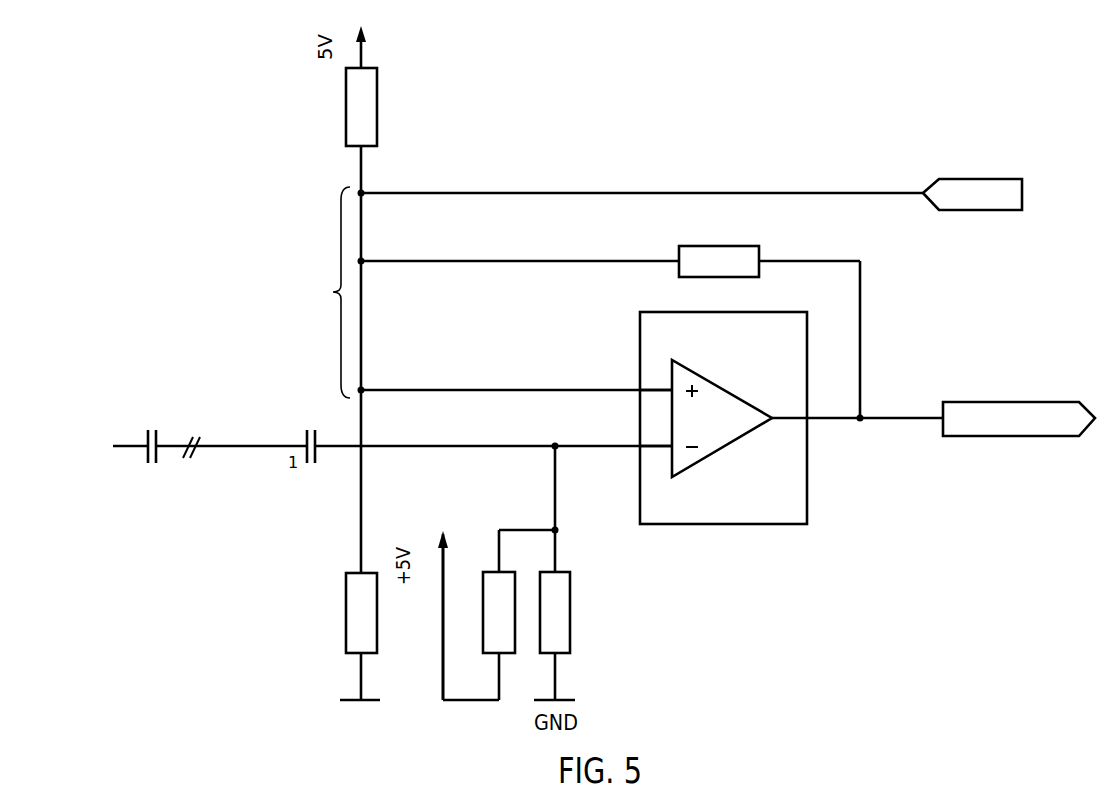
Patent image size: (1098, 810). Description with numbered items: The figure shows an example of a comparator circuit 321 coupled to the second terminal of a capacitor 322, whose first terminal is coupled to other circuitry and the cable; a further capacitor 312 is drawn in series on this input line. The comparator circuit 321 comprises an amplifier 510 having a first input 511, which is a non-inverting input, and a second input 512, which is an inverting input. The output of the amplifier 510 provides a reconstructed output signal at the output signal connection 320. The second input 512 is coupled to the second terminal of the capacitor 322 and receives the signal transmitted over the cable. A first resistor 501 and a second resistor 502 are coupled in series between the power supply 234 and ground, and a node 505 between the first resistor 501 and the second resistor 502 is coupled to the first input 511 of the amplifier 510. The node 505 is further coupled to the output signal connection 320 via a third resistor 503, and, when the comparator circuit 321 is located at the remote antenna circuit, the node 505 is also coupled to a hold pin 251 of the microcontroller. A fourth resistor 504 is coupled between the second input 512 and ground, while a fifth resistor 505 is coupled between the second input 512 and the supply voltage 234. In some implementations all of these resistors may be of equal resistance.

The power supply 234 is at (378, 16).
The second resistor 502 is at (377, 107).
The hold pin 251 is at (992, 163).
The third resistor 503 is at (737, 231).
The node 505 is at (483, 614).
The amplifier 510 is at (722, 524).
The first input 511 is at (640, 363).
The second input 512 is at (640, 447).
The output signal connection 320 is at (1037, 386).
The fourth resistor 504 is at (570, 617).
The first resistor 501 is at (346, 612).
The capacitor 312 is at (148, 430).
The capacitor 322 is at (307, 430).
The comparator circuit 321 is at (884, 590).